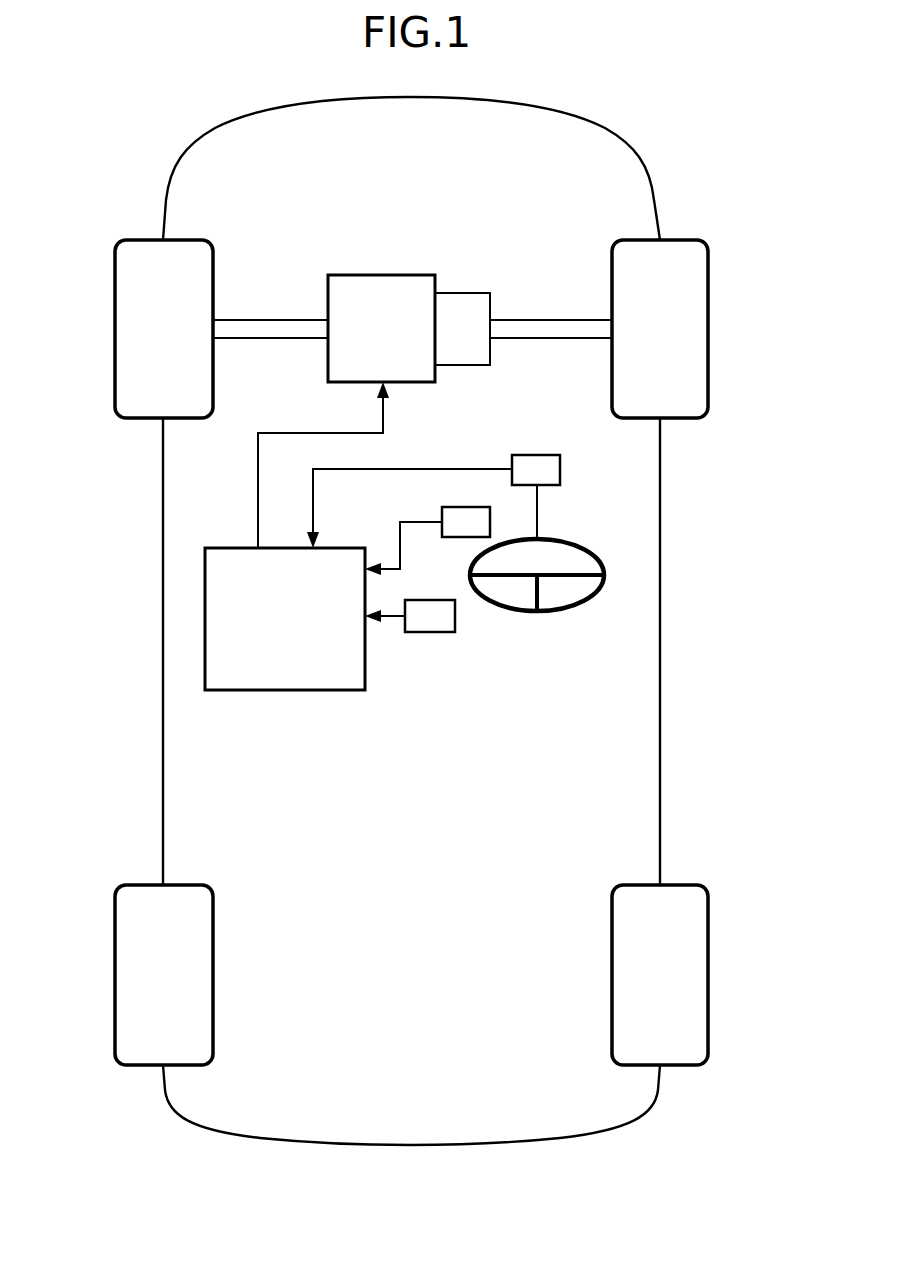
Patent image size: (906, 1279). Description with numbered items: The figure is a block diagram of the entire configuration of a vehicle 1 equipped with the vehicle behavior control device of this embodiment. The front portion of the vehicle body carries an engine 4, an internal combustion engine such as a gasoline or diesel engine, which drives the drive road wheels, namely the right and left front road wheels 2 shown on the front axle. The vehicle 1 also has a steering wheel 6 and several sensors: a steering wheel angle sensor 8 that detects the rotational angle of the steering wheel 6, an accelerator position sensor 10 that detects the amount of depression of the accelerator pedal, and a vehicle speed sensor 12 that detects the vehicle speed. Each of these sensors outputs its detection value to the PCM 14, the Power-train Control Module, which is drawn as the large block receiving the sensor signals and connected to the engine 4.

The vehicle 1 is at (656, 128).
The front road wheels 2 is at (115, 325).
The engine 4 is at (381, 275).
The steering wheel 6 is at (574, 540).
The steering wheel angle sensor 8 is at (560, 470).
The accelerator position sensor 10 is at (462, 507).
The vehicle speed sensor 12 is at (428, 634).
The PCM 14 is at (224, 546).